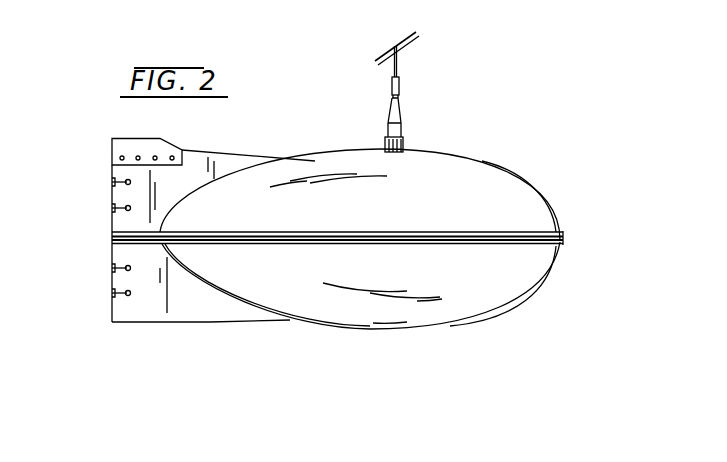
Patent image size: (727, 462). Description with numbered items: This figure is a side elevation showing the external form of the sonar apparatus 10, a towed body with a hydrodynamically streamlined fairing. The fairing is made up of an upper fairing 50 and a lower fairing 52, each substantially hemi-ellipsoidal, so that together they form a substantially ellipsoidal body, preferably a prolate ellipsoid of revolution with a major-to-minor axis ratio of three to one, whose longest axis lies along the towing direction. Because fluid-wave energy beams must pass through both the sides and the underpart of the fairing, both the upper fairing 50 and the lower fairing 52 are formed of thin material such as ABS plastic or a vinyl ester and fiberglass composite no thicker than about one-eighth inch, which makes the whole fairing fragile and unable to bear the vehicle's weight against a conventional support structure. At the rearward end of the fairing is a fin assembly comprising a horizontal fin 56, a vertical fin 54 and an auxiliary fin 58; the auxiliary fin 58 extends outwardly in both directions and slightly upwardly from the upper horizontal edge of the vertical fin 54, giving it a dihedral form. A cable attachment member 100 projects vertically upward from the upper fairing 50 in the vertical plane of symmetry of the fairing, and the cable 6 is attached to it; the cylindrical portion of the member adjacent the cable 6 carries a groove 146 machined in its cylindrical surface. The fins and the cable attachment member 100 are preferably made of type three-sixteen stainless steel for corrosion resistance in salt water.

The sonar apparatus 10 is at (489, 114).
The cable 6 is at (400, 61).
The groove 146 is at (399, 92).
The cable attachment member 100 is at (401, 111).
The upper fairing 50 is at (507, 170).
The lower fairing 52 is at (518, 298).
The horizontal fin 56 is at (112, 236).
The vertical fin 54 is at (188, 323).
The auxiliary fin 58 is at (112, 147).